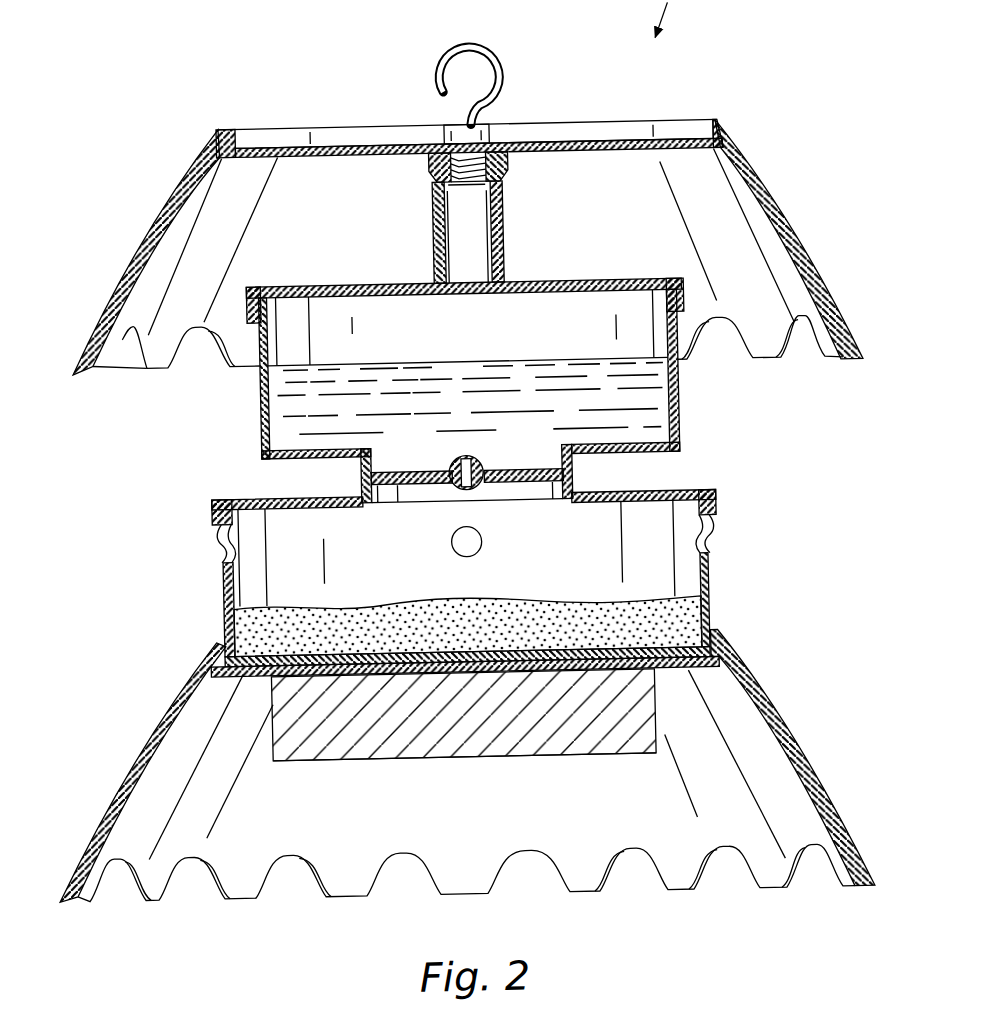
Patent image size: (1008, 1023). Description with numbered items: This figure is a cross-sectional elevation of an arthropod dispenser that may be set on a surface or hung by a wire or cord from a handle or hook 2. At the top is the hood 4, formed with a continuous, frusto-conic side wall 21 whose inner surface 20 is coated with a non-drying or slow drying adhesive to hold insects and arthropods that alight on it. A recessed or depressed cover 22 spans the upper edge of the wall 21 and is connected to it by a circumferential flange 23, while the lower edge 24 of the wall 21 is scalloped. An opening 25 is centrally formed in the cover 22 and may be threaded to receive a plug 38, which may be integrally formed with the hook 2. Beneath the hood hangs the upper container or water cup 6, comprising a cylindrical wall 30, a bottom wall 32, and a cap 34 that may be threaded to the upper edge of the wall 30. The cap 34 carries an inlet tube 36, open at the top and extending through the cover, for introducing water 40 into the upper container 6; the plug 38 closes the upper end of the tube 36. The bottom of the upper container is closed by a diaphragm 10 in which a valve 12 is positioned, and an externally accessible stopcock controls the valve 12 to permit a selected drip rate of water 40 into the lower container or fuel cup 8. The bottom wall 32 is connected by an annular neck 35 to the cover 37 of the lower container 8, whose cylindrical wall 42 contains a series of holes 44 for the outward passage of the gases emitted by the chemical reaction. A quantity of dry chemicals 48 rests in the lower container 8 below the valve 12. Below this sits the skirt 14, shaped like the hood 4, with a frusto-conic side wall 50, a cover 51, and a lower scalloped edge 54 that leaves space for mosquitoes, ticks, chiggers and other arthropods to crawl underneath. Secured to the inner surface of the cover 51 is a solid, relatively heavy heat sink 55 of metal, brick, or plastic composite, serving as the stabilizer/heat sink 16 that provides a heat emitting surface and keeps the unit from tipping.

The handle or hook 2 is at (502, 67).
The hood 4 is at (465, 236).
The upper container or water cup 6 is at (451, 388).
The lower container or fuel cup 8 is at (449, 562).
The diaphragm 10 is at (569, 461).
The valve 12 is at (478, 487).
The skirt 14 is at (465, 782).
The stabilizer/heat sink 16 is at (351, 757).
The inner surface 20 is at (372, 157).
The side wall 21 is at (128, 270).
The recessed or depressed cover 22 is at (346, 137).
The circumferential flange 23 is at (248, 124).
The lower edge 24 is at (153, 370).
The opening 25 is at (497, 184).
The cylindrical wall 30 is at (683, 379).
The bottom wall 32 is at (263, 433).
The cap 34 is at (380, 280).
The annular neck 35 is at (363, 472).
The inlet tube 36 is at (439, 213).
The cover 37 is at (228, 492).
The plug 38 is at (508, 139).
The water 40 is at (480, 365).
The cylindrical wall 42 is at (221, 584).
The holes 44 is at (215, 541).
The dry chemicals 48 is at (484, 609).
The frusto-conic side wall 50 is at (113, 790).
The cover 51 is at (729, 665).
The scalloped edge 54 is at (672, 895).
The heat sink 55 is at (455, 748).